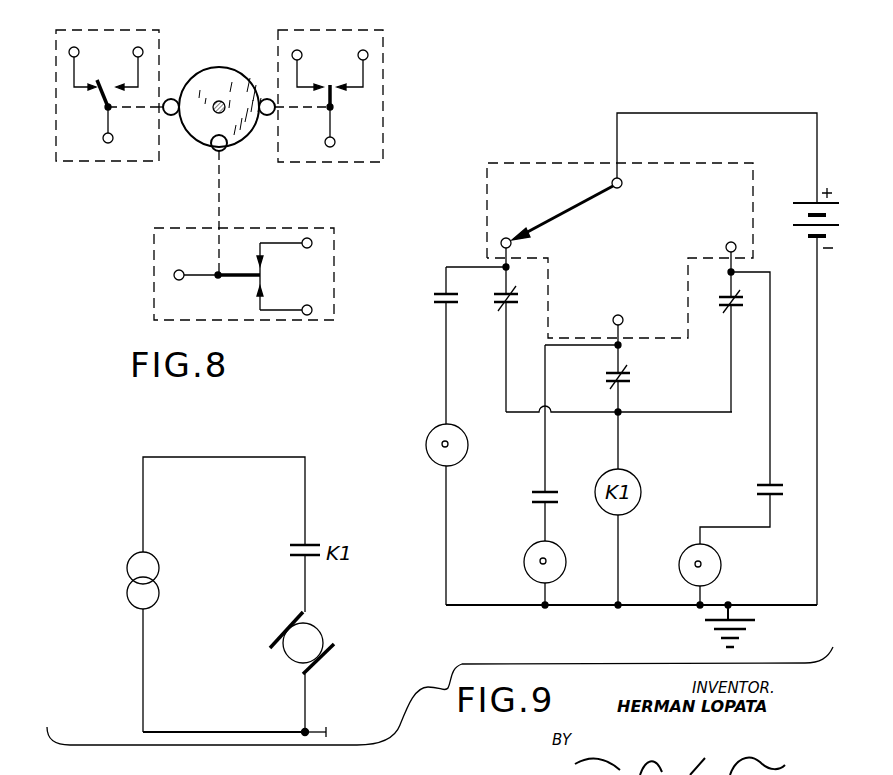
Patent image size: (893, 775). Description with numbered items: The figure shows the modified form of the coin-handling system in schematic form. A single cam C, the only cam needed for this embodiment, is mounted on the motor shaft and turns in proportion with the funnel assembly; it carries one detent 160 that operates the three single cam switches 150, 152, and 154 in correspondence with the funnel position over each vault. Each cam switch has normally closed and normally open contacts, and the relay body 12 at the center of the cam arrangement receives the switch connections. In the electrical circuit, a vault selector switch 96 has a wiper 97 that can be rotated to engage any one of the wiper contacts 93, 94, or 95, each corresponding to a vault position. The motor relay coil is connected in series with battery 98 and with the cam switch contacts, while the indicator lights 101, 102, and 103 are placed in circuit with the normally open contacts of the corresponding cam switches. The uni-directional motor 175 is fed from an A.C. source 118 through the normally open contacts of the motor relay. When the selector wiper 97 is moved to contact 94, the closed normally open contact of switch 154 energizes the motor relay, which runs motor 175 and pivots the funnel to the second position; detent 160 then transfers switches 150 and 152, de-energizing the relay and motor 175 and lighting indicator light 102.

In FIG. 8, the relay 12 is at (219, 100).
In FIG. 8, the single cam C is at (241, 68).
In FIG. 8, the single cam switch 150 is at (383, 52).
In FIG. 8, the single cam switch 152 is at (335, 243).
In FIG. 8, the single cam switch 154 is at (83, 163).
In FIG. 8, the single detent 160 is at (212, 153).
In FIG. 9, the wiper contact 93 is at (530, 208).
In FIG. 9, the wiper contact 94 is at (612, 323).
In FIG. 9, the wiper contact 95 is at (731, 242).
In FIG. 9, the vault selector switch 96 is at (698, 163).
In FIG. 9, the wiper 97 is at (583, 203).
In FIG. 9, the battery 98 is at (803, 201).
In FIG. 9, the indicator light 101 is at (465, 460).
In FIG. 9, the indicator light 102 is at (564, 567).
In FIG. 9, the indicator light 103 is at (723, 567).
In FIG. 9, the A.C. source 118 is at (130, 608).
In FIG. 9, the uni-directional motor 175 is at (314, 640).